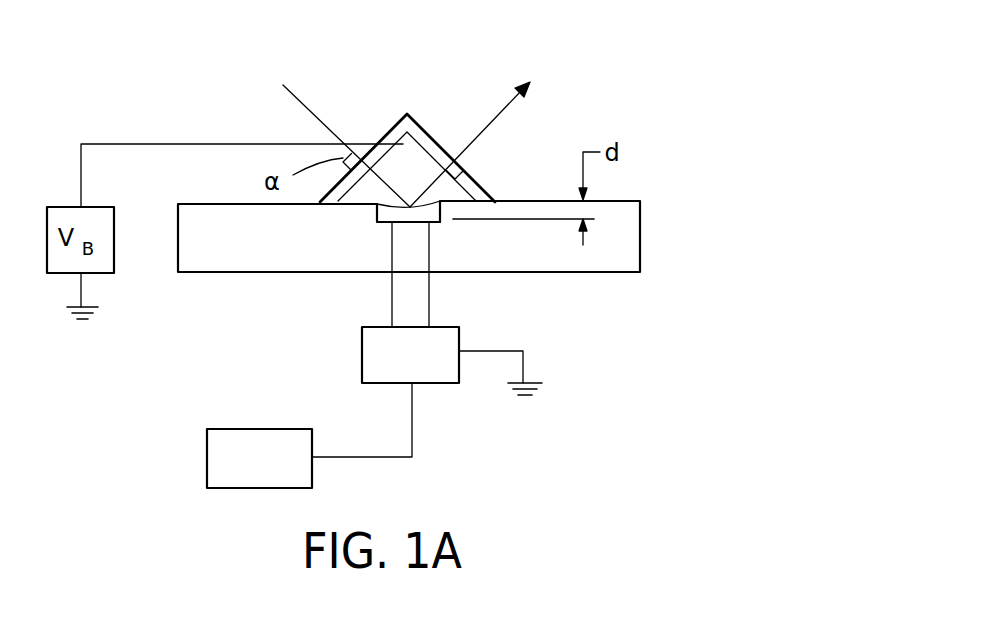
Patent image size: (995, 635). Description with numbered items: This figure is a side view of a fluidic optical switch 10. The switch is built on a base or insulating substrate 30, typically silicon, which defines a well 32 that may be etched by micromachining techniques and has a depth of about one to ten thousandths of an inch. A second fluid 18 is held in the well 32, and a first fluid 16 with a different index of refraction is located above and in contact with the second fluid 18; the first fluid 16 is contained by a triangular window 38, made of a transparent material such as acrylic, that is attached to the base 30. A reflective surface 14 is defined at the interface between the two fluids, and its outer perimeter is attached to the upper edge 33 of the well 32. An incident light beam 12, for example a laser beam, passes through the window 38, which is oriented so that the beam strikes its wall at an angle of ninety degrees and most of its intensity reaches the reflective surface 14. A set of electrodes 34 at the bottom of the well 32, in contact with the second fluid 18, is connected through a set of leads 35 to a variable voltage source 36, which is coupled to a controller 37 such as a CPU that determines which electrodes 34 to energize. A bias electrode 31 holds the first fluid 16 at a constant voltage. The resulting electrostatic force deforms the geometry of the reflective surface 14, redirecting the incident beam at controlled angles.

The fluidic optical switch 10 is at (605, 98).
The incident light beam 12 is at (302, 100).
The reflective surface 14 is at (374, 221).
The first fluid 16 is at (445, 183).
The second fluid 18 is at (433, 214).
The insulating substrate 30 is at (642, 230).
The bias electrode 31 is at (388, 135).
The well 32 is at (383, 223).
The upper edge of the well 33 is at (375, 203).
The electrodes 34 is at (390, 223).
The leads 35 is at (428, 302).
The variable voltage source 36 is at (396, 368).
The controller 37 is at (242, 470).
The triangular window 38 is at (418, 127).